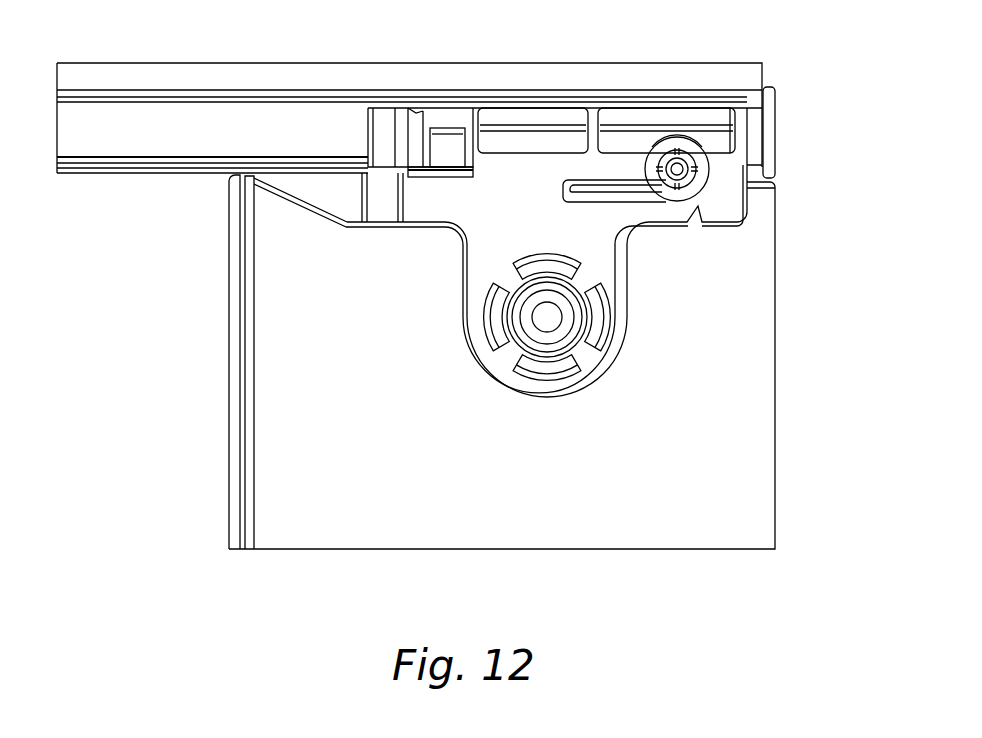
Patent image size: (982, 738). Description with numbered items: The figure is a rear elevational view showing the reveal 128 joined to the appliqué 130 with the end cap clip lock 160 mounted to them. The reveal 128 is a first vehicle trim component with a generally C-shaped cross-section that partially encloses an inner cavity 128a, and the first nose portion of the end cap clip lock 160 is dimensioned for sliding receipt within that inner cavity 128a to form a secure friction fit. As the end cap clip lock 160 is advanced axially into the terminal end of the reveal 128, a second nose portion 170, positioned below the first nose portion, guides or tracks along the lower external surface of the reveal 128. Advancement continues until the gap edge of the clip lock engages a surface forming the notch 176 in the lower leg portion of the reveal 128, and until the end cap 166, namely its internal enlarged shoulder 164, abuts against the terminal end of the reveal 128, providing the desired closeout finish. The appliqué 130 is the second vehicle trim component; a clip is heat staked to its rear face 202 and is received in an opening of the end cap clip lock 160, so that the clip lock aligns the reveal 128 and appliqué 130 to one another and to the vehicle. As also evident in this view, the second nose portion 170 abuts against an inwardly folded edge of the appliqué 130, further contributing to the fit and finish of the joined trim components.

The reveal 128 is at (235, 77).
The inner cavity 128a is at (57, 82).
The notch 176 is at (382, 133).
The end cap 166 is at (769, 128).
The enlarged shoulder 164 is at (777, 181).
The second nose portion 170 is at (325, 190).
The end cap clip lock 160 is at (370, 295).
The appliqué 130 is at (697, 332).
The rear face 202 is at (688, 433).